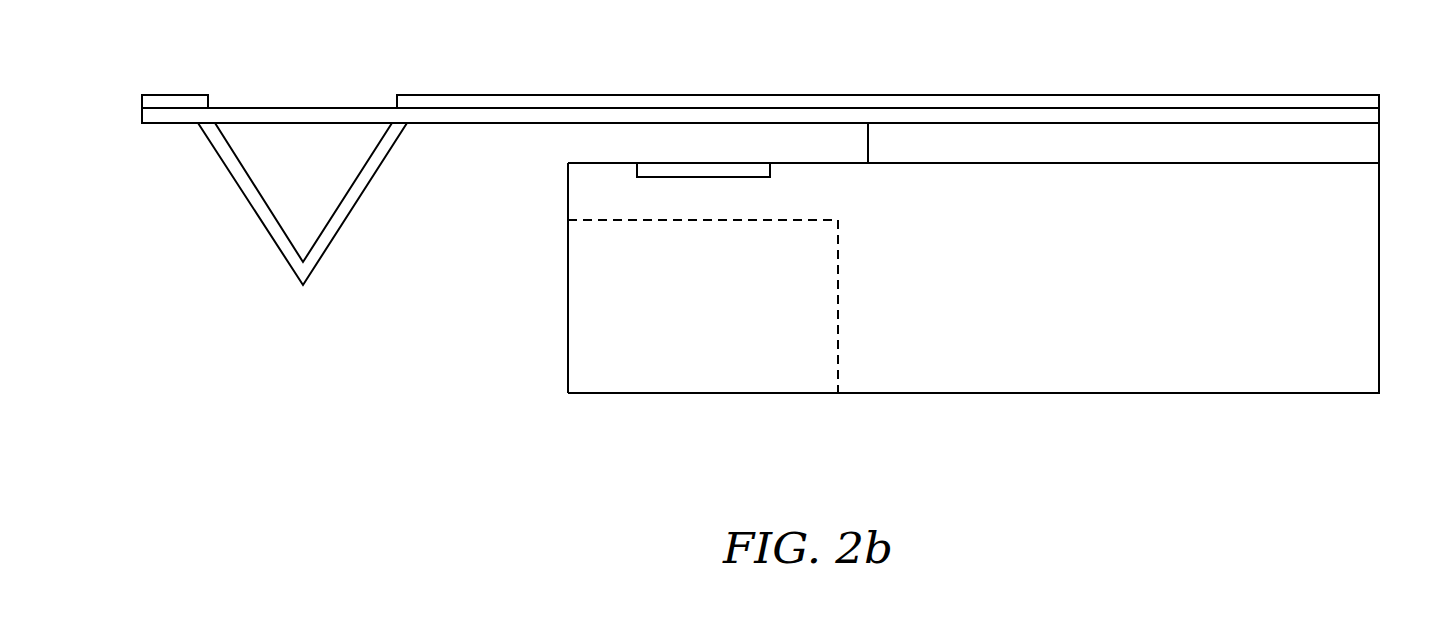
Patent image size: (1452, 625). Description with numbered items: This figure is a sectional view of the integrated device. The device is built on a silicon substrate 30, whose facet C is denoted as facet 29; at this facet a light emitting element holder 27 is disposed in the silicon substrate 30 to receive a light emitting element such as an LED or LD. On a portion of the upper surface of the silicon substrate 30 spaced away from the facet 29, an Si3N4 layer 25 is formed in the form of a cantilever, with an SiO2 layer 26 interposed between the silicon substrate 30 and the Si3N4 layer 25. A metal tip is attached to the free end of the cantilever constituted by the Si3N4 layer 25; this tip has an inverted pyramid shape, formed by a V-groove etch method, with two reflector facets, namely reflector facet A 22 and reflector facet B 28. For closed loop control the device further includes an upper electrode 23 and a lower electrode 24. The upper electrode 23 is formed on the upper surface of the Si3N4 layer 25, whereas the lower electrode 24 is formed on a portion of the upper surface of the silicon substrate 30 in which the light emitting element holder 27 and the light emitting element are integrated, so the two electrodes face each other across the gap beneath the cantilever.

The reflector facet A 22 is at (240, 190).
The upper electrode 23 is at (720, 96).
The lower electrode 24 is at (705, 178).
The Si3N4 layer 25 is at (1172, 117).
The SiO2 layer 26 is at (1367, 143).
The light emitting element holder 27 is at (760, 378).
The reflector facet B 28 is at (355, 205).
The facet C 29 is at (568, 378).
The silicon substrate 30 is at (1092, 380).